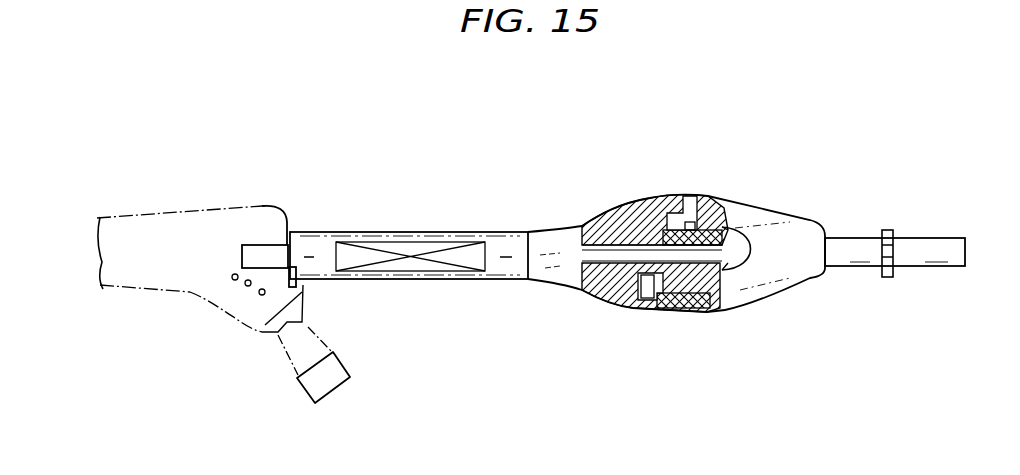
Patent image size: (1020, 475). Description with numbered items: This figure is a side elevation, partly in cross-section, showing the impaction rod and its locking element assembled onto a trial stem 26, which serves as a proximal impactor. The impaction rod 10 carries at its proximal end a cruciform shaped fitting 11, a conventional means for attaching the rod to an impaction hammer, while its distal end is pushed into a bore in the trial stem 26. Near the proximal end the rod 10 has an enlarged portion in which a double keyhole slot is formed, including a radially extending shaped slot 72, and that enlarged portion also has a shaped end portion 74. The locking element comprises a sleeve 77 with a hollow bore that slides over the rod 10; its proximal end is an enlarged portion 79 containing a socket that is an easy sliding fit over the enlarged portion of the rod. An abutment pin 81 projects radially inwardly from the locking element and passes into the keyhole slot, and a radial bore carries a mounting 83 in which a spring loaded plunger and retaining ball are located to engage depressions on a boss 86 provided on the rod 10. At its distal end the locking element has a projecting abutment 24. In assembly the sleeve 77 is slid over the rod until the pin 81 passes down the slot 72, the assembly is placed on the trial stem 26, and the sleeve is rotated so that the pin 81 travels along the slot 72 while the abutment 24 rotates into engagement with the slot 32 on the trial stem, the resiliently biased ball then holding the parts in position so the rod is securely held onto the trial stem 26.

The impaction rod 10 is at (845, 238).
The cruciform shaped fitting 11 is at (888, 230).
The projecting abutment 24 is at (297, 285).
The trial stem 26 is at (140, 262).
The slot 32 is at (303, 287).
The radially extending shaped slot 72 is at (720, 200).
The shaped end portion 74 is at (775, 212).
The sleeve 77 is at (418, 232).
The enlarged portion 79 is at (610, 302).
The abutment pin 81 is at (690, 206).
The mounting 83 is at (646, 306).
The boss 86 is at (650, 199).